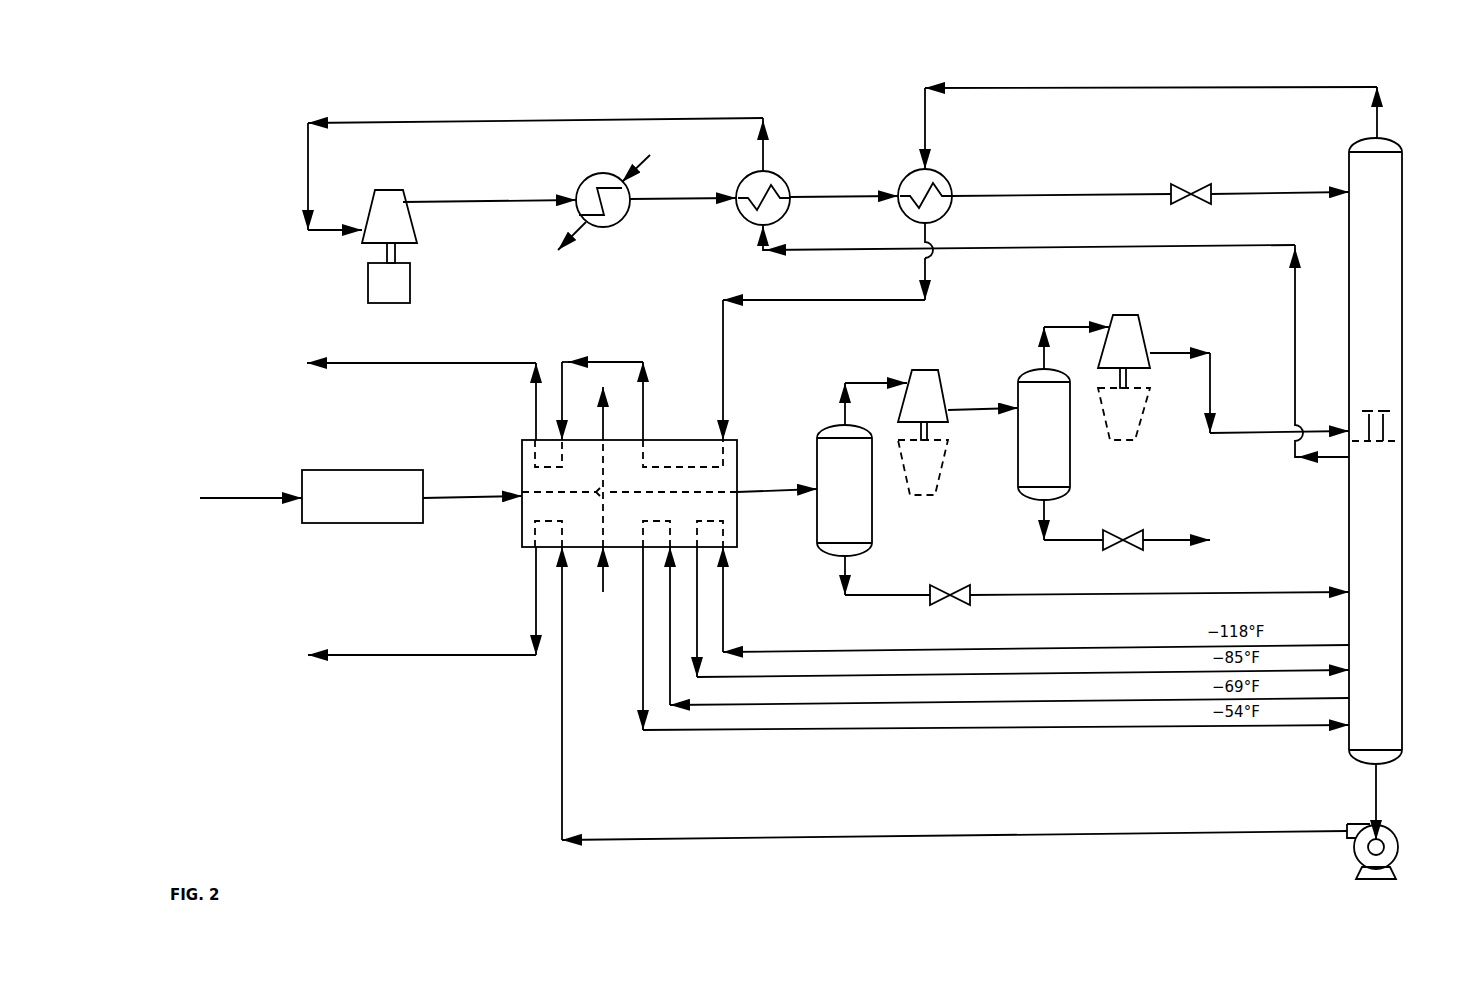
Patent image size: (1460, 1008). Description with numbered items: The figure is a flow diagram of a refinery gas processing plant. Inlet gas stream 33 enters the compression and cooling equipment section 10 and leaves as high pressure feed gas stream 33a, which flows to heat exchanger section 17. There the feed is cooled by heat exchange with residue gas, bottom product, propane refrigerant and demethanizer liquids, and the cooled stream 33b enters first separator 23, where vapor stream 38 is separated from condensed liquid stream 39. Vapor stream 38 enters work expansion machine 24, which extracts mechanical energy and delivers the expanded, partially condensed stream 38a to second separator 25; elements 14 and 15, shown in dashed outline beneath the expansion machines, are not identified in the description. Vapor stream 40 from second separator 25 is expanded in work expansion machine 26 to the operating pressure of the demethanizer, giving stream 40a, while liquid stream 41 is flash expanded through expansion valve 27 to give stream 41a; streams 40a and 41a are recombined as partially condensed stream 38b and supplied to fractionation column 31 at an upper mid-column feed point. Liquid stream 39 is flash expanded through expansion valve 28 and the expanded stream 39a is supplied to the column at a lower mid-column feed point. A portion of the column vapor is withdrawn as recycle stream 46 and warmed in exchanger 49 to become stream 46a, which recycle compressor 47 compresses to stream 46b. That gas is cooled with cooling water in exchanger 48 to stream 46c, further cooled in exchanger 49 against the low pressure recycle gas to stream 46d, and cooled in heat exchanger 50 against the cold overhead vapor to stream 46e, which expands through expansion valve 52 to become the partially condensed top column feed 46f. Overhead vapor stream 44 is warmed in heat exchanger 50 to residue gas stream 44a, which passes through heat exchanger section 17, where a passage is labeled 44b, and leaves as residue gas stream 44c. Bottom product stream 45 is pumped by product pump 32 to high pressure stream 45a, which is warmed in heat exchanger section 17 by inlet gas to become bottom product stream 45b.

The compression and cooling equipment section 10 is at (363, 524).
The work expansion machine 14 is at (942, 470).
The work expansion machine 15 is at (1143, 413).
The heat exchanger section 17 is at (737, 538).
The first separator 23 is at (873, 510).
The work expansion machine 24 is at (942, 372).
The second separator 25 is at (1071, 455).
The work expansion machine 26 is at (1142, 317).
The expansion valve 27 is at (1098, 532).
The expansion valve 28 is at (926, 587).
The fractionation column 31 is at (1349, 490).
The product pump 32 is at (1358, 866).
The inlet gas stream 33 is at (243, 500).
The high pressure feed gas stream 33a is at (462, 500).
The cooled feed stream 33b is at (769, 492).
The first separator vapor stream 38 is at (862, 385).
The expanded stream 38a is at (975, 411).
The partially condensed recombined stream 38b is at (1250, 434).
The first separator liquid stream 39 is at (873, 597).
The expanded liquid stream 39a is at (1005, 597).
The second separator vapor stream 40 is at (1065, 329).
The expanded stream 40a is at (1211, 376).
The second separator liquid stream 41 is at (1072, 542).
The expanded liquid stream 41a is at (1175, 542).
The demethanizer overhead vapor stream 44 is at (1247, 89).
The warmed residue gas stream 44a is at (843, 302).
The warmed overhead stream 44b is at (644, 408).
The residue gas stream 44c is at (470, 365).
The bottom product stream 45 is at (1376, 782).
The high pressure product stream 45a is at (1243, 834).
The warmed bottom product stream 45b is at (468, 657).
The recycle stream 46 is at (1218, 252).
The warmed recycle gas stream 46a is at (548, 125).
The compressed recycle gas stream 46b is at (495, 204).
The cooled high pressure recycle gas stream 46c is at (696, 201).
The further cooled recycle gas stream 46d is at (852, 199).
The cooled recycle stream 46e is at (1112, 196).
The partially condensed recycle stream 46f is at (1270, 196).
The recycle compressor 47 is at (370, 205).
The exchanger 48 is at (624, 219).
The exchanger 49 is at (784, 217).
The heat exchanger 50 is at (945, 216).
The expansion valve 52 is at (1168, 185).